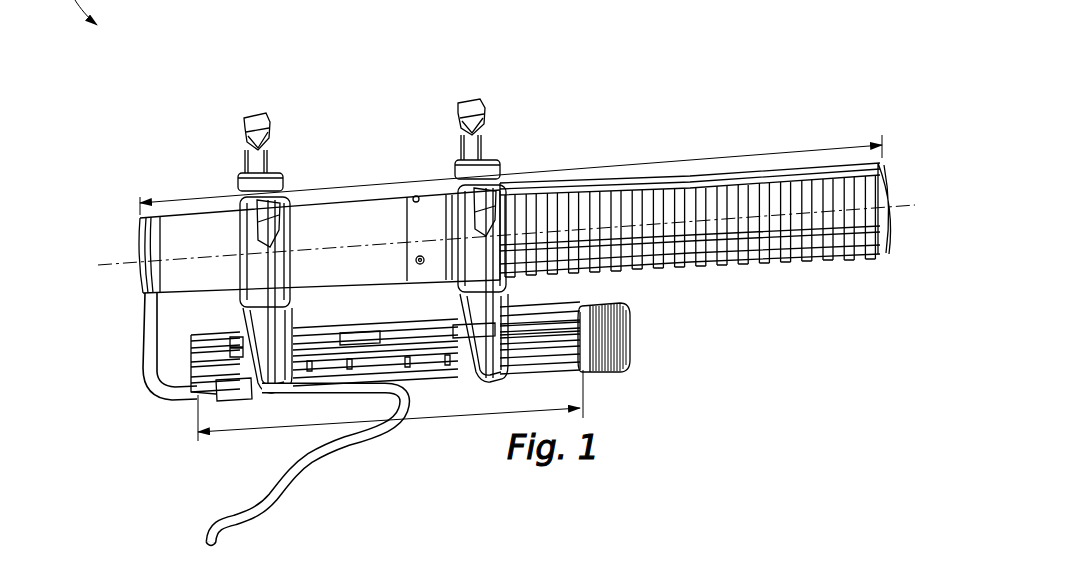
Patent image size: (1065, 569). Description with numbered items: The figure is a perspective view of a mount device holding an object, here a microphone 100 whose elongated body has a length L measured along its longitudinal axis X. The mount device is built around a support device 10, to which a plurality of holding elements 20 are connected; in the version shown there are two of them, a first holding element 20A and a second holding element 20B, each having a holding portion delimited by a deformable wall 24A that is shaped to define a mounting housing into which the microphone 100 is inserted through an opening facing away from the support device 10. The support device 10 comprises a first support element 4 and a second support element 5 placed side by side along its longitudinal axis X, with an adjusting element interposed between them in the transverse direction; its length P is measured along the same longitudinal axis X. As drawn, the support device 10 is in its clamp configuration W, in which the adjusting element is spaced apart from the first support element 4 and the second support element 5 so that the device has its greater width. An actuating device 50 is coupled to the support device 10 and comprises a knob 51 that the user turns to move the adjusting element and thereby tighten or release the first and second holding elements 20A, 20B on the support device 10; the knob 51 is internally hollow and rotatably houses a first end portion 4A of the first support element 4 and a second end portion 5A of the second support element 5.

The microphone 100 is at (778, 108).
The holding elements 20 is at (580, 118).
The first holding element 20A is at (477, 90).
The second holding element 20B is at (265, 100).
The deformable wall 24A is at (238, 293).
The support device 10 is at (156, 366).
The first support element 4 is at (530, 340).
The first end portion 4A is at (573, 352).
The second support element 5 is at (537, 320).
The second end portion 5A is at (568, 332).
The actuating device 50 is at (640, 375).
The knob 51 is at (625, 325).
The clamp configuration W is at (97, 200).
The length L is at (657, 162).
The longitudinal axis X is at (120, 265).
The length P is at (462, 418).